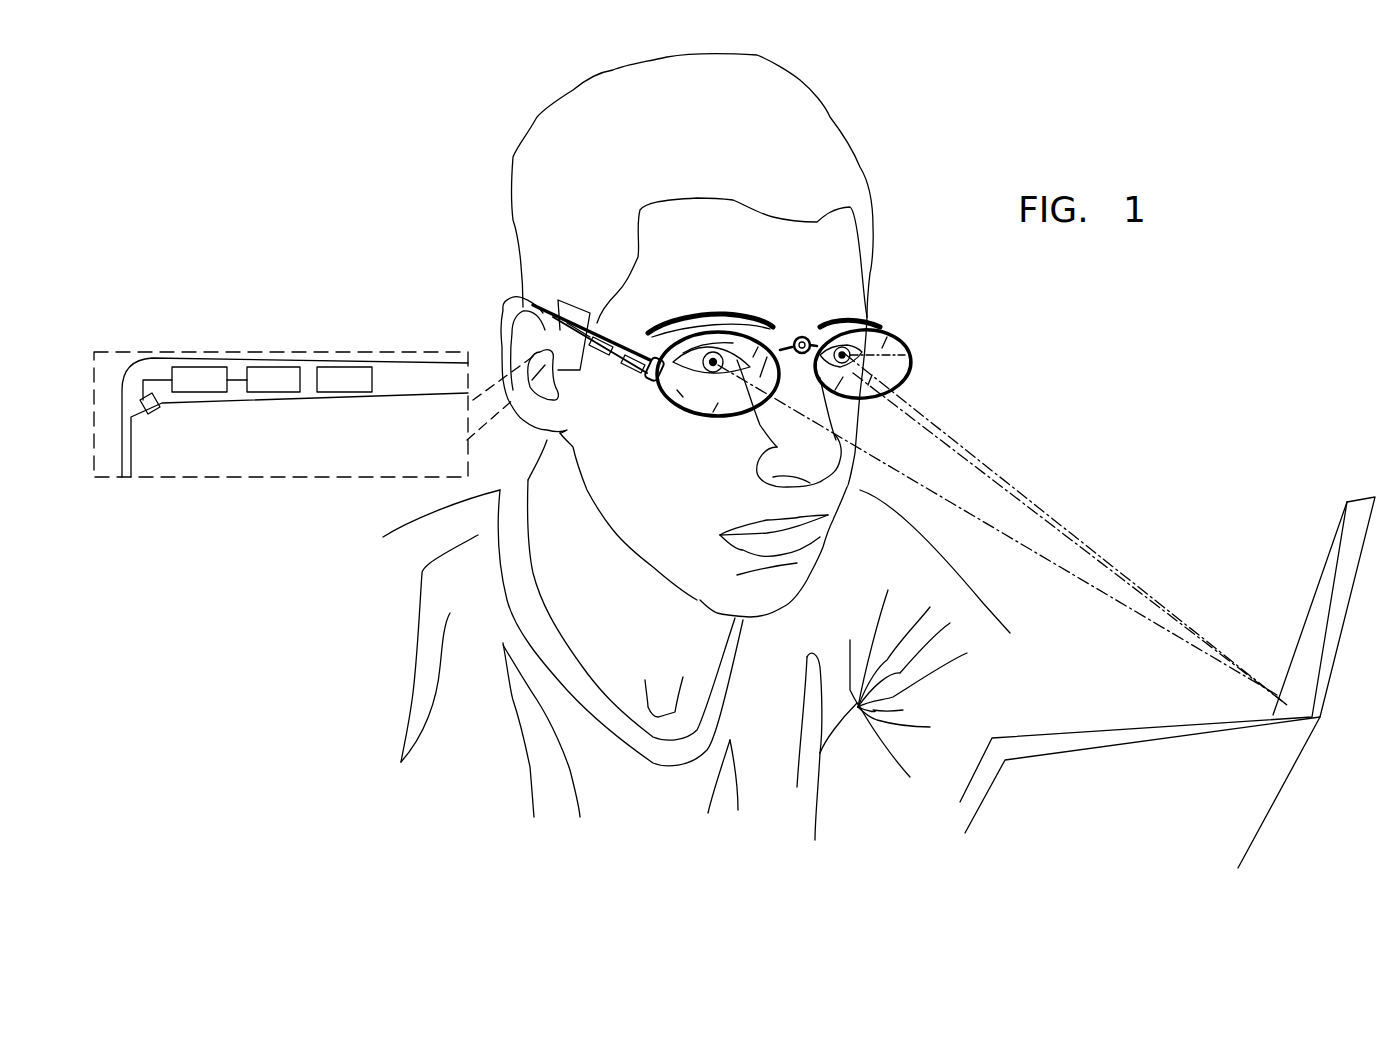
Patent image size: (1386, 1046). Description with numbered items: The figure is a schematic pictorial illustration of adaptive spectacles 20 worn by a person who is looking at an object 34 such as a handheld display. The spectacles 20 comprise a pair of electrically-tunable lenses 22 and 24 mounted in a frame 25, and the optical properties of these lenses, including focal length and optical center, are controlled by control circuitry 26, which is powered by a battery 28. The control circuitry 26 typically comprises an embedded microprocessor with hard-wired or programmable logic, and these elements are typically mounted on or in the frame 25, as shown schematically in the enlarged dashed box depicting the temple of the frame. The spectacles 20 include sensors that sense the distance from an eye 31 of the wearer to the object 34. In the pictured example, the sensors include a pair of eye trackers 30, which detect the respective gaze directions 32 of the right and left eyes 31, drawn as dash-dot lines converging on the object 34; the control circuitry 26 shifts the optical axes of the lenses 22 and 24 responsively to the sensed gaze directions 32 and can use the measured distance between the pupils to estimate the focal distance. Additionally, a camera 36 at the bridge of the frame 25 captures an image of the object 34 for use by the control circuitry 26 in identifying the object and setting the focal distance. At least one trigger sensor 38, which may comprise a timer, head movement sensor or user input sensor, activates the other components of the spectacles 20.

The adaptive spectacles 20 is at (920, 307).
The electrically-tunable lens 22 is at (690, 403).
The electrically-tunable lens 24 is at (903, 380).
The frame 25 is at (660, 333).
The control circuitry 26 is at (205, 360).
The battery 28 is at (338, 362).
The eye tracker 30 is at (650, 385).
The eye 31 is at (811, 372).
The gaze direction 32 is at (1042, 512).
The object 34 is at (1288, 705).
The camera 36 is at (803, 333).
The trigger sensor 38 is at (607, 363).